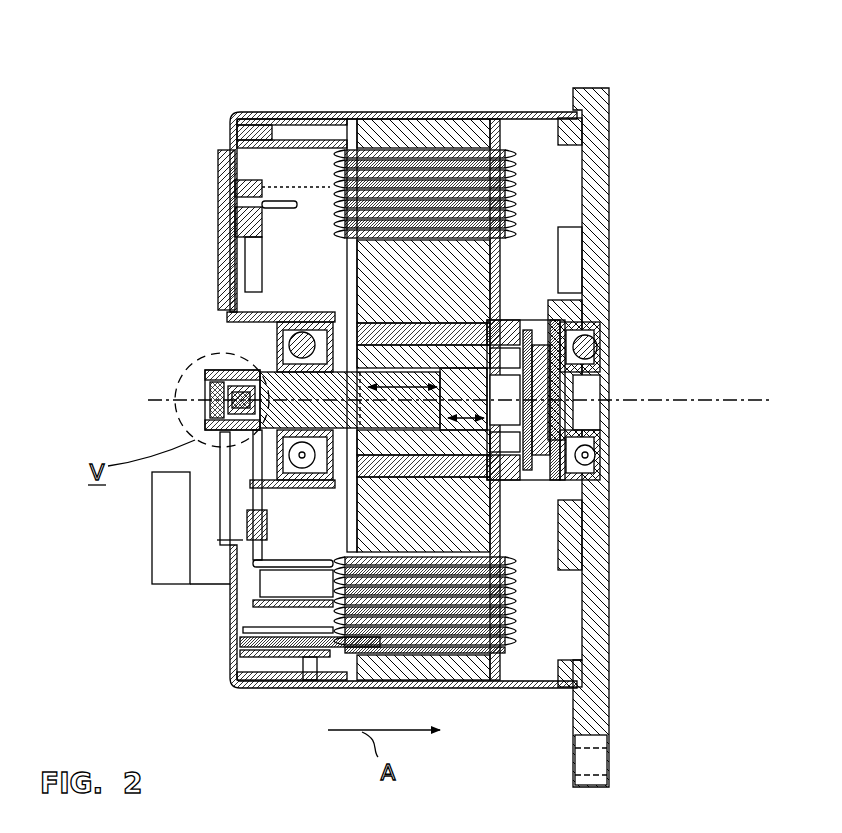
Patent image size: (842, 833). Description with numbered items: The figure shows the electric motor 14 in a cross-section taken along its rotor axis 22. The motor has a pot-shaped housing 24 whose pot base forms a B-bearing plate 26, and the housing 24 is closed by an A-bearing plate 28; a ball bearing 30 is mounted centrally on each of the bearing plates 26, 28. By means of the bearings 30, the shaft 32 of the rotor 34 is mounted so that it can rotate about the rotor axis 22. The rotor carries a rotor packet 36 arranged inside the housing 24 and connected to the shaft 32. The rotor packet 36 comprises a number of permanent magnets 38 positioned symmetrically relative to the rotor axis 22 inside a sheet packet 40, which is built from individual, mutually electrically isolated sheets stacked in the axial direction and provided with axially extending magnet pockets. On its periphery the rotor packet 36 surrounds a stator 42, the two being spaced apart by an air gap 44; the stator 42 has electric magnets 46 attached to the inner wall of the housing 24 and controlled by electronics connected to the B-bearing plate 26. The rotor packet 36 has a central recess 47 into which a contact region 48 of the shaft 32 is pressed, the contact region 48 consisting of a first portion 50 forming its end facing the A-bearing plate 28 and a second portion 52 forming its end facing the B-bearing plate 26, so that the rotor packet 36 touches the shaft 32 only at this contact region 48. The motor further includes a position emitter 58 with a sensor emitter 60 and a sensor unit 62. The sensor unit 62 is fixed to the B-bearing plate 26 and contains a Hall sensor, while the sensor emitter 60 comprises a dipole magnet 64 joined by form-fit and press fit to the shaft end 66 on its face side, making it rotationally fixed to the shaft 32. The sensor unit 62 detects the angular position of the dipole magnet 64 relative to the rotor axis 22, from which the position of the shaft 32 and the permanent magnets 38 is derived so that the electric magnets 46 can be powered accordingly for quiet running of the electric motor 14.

The electric motor 14 is at (205, 90).
The rotor axis 22 is at (735, 402).
The housing 24 is at (366, 112).
The B-bearing plate 26 is at (255, 300).
The A-bearing plate 28 is at (601, 215).
The ball bearing 30 is at (282, 330).
The shaft 32 is at (340, 378).
The rotor 34 is at (458, 542).
The rotor packet 36 is at (463, 253).
The permanent magnets 38 is at (350, 290).
The sheet packet 40 is at (497, 512).
The stator 42 is at (435, 583).
The air gap 44 is at (418, 223).
The electric magnets 46 is at (515, 165).
The central recess 47 is at (405, 452).
The contact region 48 is at (408, 372).
The first portion 50 is at (505, 442).
The second portion 52 is at (440, 448).
The position emitter 58 is at (97, 523).
The sensor emitter 60 is at (215, 383).
The sensor unit 62 is at (160, 568).
The dipole magnet 64 is at (205, 413).
The shaft end 66 is at (272, 420).